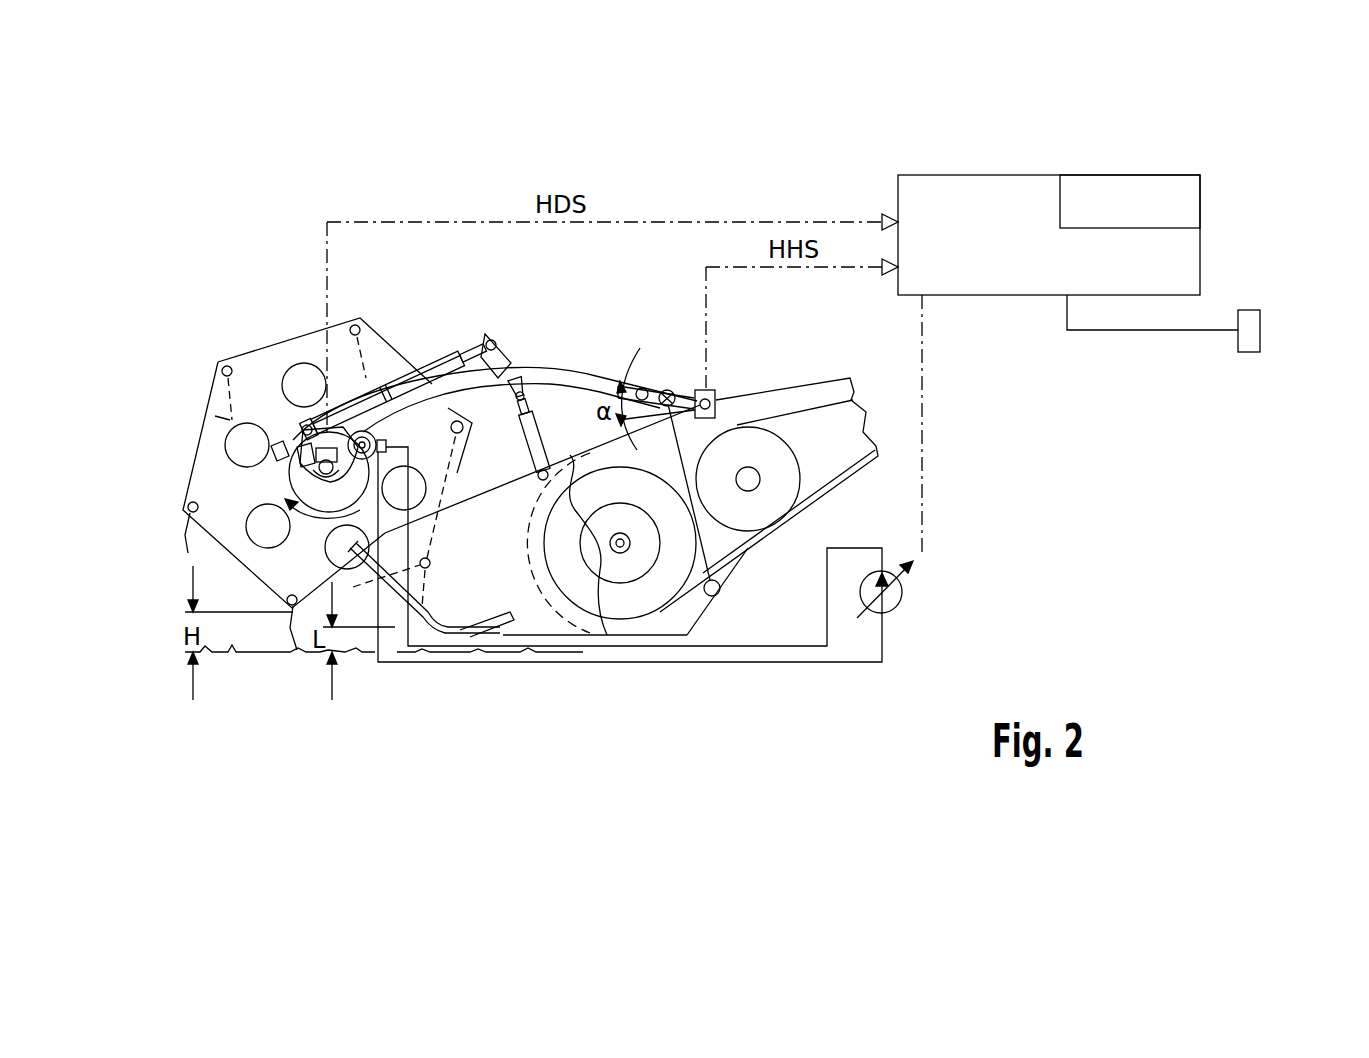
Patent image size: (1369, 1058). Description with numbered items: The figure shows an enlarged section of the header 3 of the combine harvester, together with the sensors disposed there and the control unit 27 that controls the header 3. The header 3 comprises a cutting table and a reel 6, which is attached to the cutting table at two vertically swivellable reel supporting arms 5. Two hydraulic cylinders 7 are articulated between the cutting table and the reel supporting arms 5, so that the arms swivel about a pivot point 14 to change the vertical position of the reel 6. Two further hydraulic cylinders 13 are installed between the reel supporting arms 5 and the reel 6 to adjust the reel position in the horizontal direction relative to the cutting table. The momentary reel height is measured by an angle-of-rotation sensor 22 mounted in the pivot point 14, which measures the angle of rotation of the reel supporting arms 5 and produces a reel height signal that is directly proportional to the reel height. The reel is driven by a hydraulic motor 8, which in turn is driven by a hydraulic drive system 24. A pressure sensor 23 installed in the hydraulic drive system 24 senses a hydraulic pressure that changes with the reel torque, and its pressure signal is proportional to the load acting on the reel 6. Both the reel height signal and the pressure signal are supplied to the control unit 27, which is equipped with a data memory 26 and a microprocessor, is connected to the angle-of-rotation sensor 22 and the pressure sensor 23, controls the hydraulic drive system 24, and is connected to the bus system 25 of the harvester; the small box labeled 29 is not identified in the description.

The header 3 is at (272, 335).
The reel supporting arms 5 is at (583, 375).
The reel 6 is at (218, 415).
The hydraulic cylinders 7 is at (543, 375).
The hydraulic motor 8 is at (366, 430).
The further hydraulic cylinders 13 is at (440, 345).
The pivot point 14 is at (670, 385).
The angle-of-rotation sensor 22 is at (716, 400).
The pressure sensor 23 is at (314, 466).
The hydraulic drive system 24 is at (628, 663).
The bus system 25 is at (1178, 331).
The data memory 26 is at (1183, 200).
The control unit 27 is at (1183, 261).
The operator input 29 is at (1252, 325).